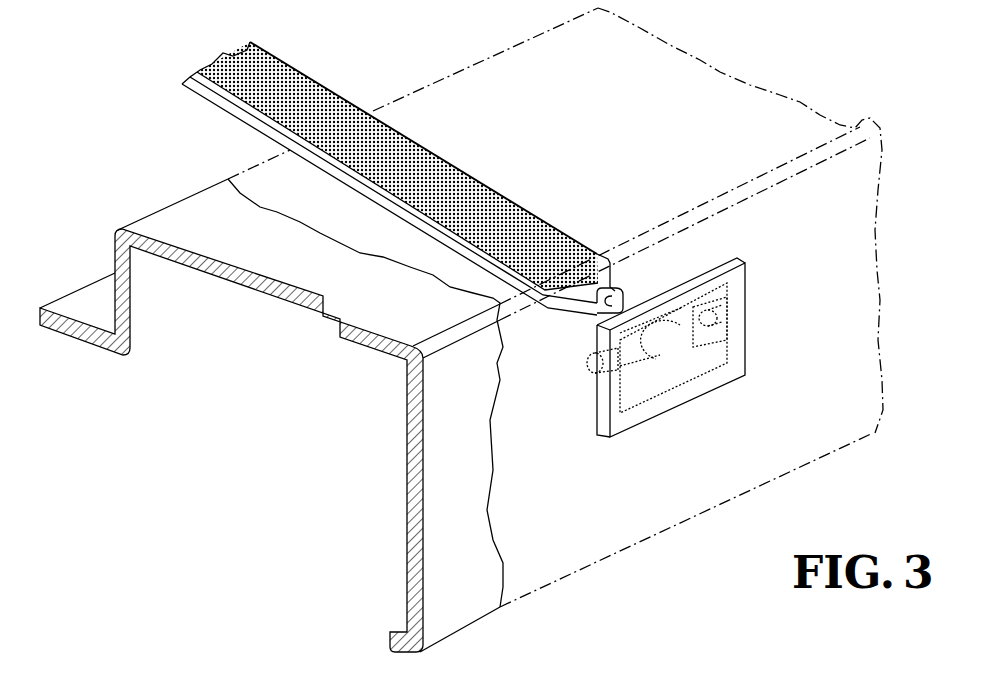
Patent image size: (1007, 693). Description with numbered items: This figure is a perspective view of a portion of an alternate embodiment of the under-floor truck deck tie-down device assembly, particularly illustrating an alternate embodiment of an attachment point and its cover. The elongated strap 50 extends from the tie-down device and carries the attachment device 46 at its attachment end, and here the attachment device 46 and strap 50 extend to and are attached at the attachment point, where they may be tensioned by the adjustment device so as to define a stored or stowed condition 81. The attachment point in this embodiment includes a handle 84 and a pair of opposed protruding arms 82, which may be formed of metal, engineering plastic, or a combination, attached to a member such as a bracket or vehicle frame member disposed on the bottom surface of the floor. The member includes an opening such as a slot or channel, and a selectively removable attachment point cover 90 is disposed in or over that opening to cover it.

The stored condition 81 is at (311, 440).
The elongated strap 50 is at (468, 182).
The attachment device 46 is at (620, 297).
The attachment point cover 90 is at (748, 352).
The handle 84 is at (682, 278).
The protruding arms 82 is at (592, 365).